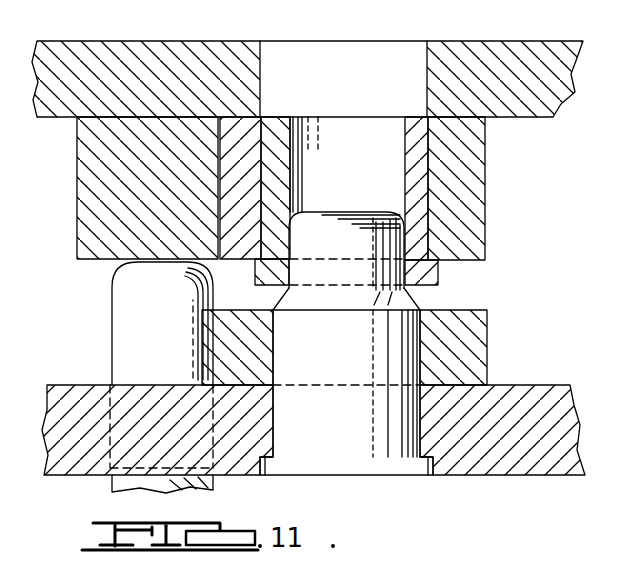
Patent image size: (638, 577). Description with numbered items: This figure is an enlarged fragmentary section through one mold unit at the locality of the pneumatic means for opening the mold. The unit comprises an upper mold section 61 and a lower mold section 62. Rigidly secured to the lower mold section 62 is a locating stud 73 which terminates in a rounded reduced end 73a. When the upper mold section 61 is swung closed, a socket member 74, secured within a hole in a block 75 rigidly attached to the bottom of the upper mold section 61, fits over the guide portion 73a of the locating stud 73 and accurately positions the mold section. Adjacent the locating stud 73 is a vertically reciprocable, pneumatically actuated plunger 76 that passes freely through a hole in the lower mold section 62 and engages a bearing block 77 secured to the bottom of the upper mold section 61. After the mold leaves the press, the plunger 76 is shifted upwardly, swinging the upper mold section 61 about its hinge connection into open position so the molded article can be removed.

The upper mold section 61 is at (557, 63).
The lower mold section 62 is at (493, 466).
The locating stud 73 is at (365, 330).
The rounded reduced end 73a is at (330, 218).
The socket member 74 is at (283, 168).
The block 75 is at (470, 182).
The pneumatically actuated plunger 76 is at (115, 330).
The bearing block 77 is at (82, 192).